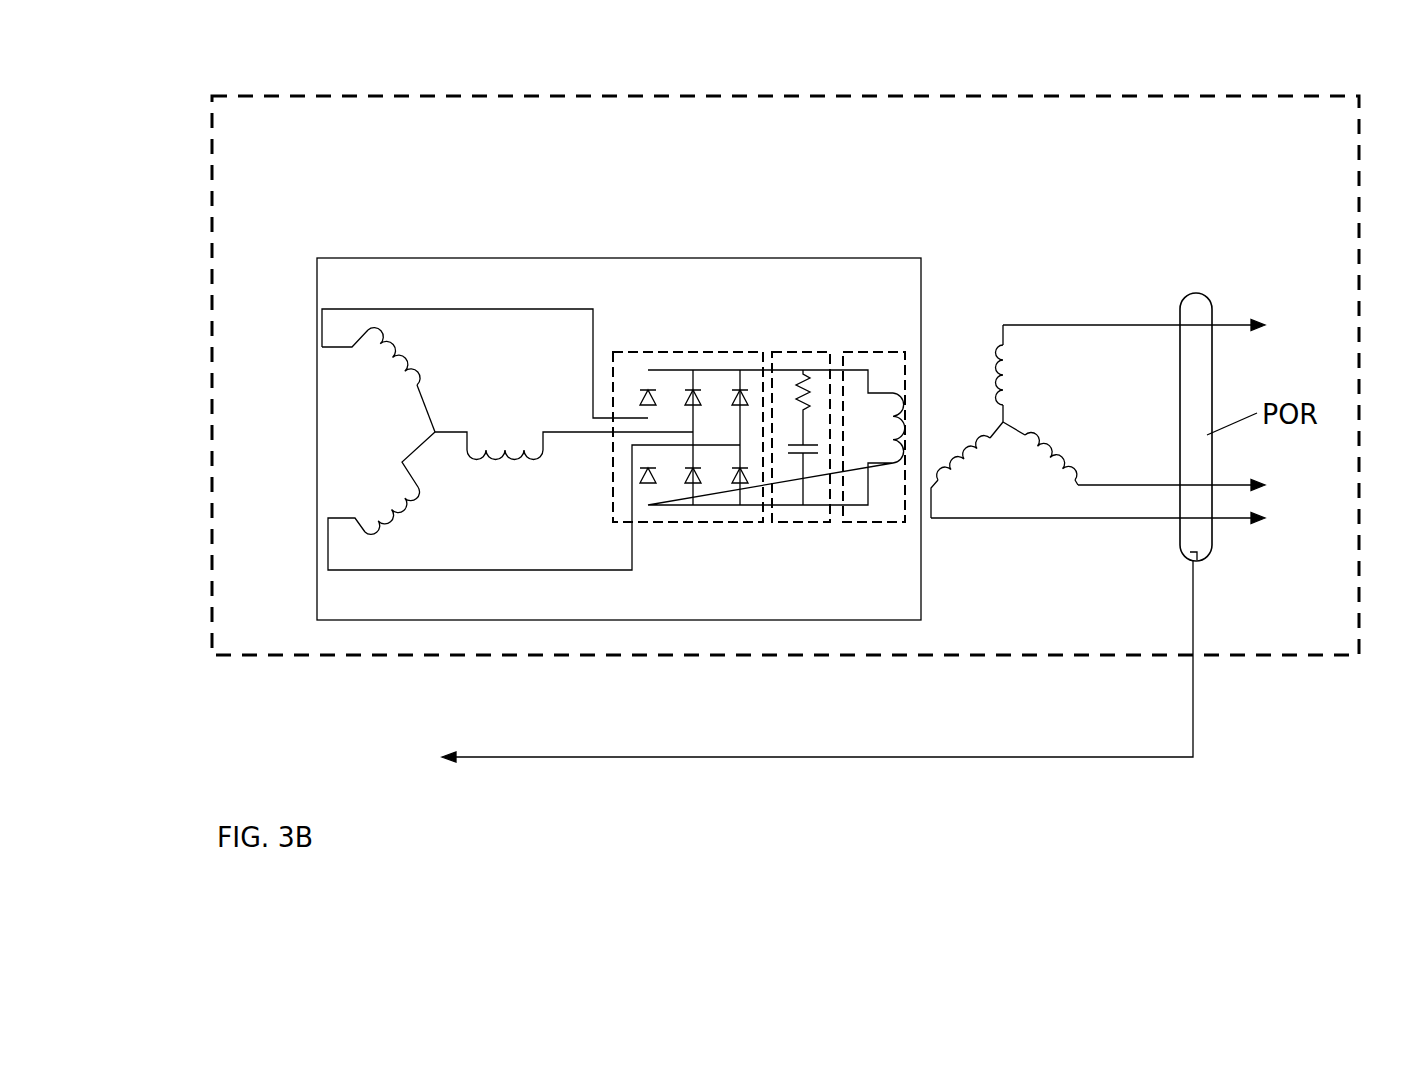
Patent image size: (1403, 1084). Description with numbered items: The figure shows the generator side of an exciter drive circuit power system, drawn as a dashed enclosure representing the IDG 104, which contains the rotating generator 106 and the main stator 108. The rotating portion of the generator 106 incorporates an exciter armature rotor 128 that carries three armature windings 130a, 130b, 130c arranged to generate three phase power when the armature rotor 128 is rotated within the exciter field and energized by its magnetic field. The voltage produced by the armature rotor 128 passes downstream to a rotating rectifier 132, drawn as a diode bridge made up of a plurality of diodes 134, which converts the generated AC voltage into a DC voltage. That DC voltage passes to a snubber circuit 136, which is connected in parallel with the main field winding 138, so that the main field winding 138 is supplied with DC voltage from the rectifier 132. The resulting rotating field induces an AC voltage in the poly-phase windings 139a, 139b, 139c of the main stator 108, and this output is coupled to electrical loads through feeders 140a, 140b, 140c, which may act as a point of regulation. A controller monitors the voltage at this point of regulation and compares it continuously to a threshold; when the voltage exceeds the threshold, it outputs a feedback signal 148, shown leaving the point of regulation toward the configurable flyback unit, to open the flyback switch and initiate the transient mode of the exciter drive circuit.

The IDG 104 is at (467, 95).
The rotating generator 106 is at (618, 258).
The main stator 108 is at (1005, 362).
The exciter armature rotor 128 is at (531, 439).
The armature winding 130a is at (388, 357).
The armature winding 130b is at (393, 520).
The armature winding 130c is at (510, 463).
The rotating rectifier 132 is at (753, 427).
The diode 134 is at (650, 480).
The snubber circuit 136 is at (793, 348).
The main field winding 138 is at (873, 348).
The poly-phase winding 139a is at (998, 348).
The poly-phase winding 139b is at (985, 450).
The poly-phase winding 139c is at (1038, 442).
The feeder 140a is at (1158, 322).
The feeder 140b is at (1102, 520).
The feeder 140c is at (1135, 483).
The feedback signal 148 is at (787, 757).